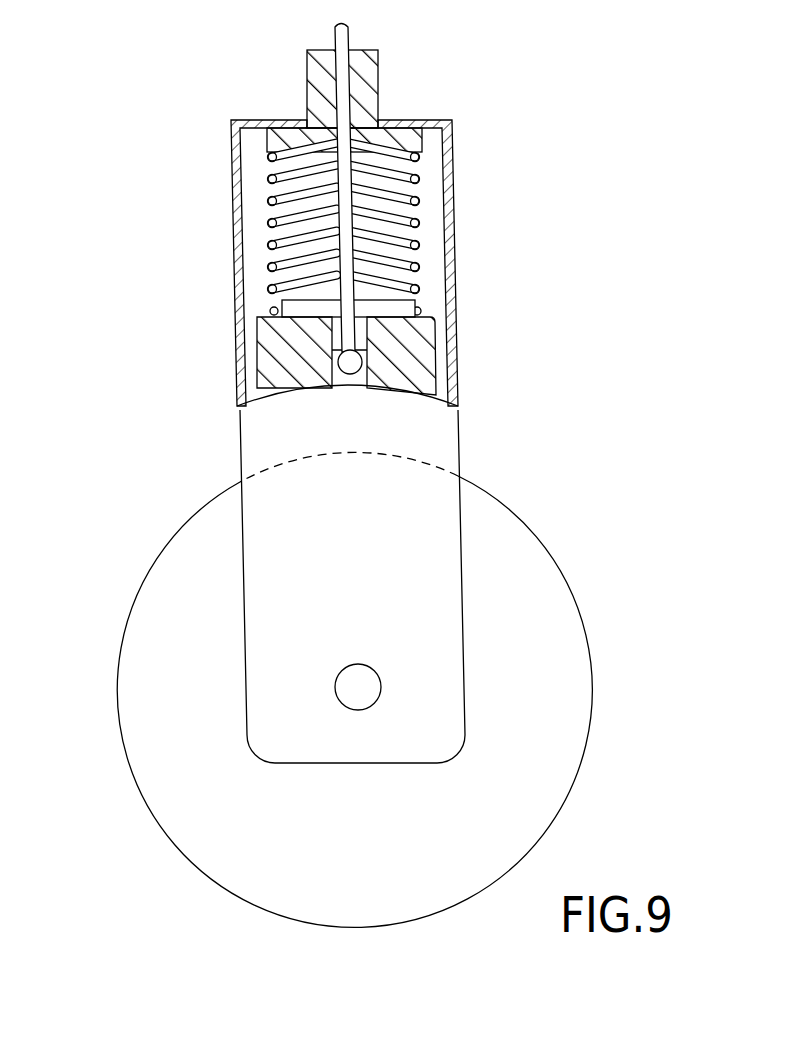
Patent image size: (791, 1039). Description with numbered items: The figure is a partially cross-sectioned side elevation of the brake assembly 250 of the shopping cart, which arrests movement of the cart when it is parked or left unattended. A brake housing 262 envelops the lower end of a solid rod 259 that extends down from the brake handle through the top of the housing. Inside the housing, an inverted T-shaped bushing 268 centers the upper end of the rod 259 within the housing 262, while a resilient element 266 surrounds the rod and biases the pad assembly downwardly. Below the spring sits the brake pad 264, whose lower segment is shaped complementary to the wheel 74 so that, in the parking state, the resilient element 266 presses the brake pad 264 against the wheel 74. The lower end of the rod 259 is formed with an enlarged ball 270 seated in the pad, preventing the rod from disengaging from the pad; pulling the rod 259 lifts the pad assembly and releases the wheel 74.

The brake assembly 250 is at (150, 406).
The solid rod 259 is at (343, 78).
The inverted T-shaped bushing 268 is at (307, 84).
The resilient element 266 is at (420, 221).
The brake pad 264 is at (407, 352).
The enlarged ball 270 is at (350, 375).
The brake housing 262 is at (438, 438).
The wheel 74 is at (517, 600).